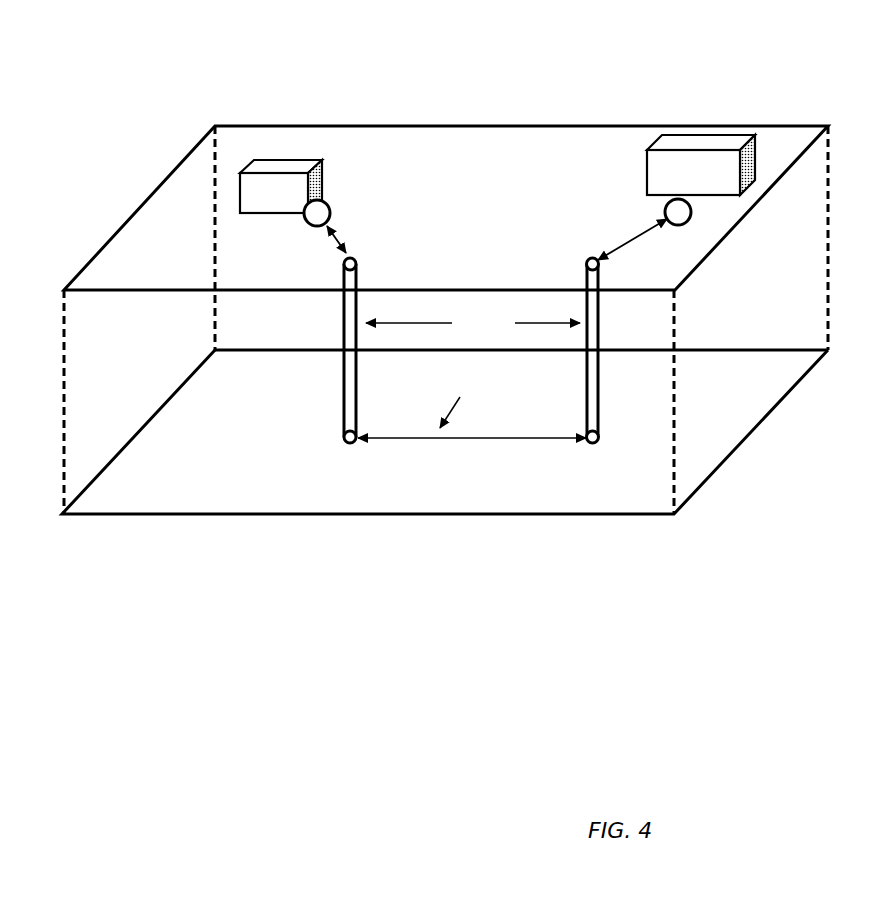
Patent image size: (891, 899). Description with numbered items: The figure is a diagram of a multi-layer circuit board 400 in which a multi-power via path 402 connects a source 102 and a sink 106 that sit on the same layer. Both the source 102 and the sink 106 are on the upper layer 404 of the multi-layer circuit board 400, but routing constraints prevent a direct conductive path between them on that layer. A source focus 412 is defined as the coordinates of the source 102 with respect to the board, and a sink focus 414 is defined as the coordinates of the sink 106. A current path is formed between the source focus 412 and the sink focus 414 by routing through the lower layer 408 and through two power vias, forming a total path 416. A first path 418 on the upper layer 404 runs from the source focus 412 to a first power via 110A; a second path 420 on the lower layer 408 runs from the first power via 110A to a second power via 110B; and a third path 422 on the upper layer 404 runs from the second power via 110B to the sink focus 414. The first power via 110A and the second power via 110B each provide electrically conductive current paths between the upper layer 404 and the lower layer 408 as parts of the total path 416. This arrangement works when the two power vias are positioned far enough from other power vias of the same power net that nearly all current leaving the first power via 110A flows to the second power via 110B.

The multi-layer circuit board 400 is at (520, 48).
The upper layer 404 is at (445, 140).
The lower layer 408 is at (572, 502).
The sink 106 is at (259, 159).
The source 102 is at (731, 133).
The sink focus 414 is at (330, 213).
The source focus 412 is at (663, 210).
The second power via 110B is at (358, 413).
The first power via 110A is at (600, 426).
The third path 422 is at (343, 240).
The first path 418 is at (640, 238).
The multi-power via path 402 is at (473, 325).
The total path 416 is at (490, 393).
The second path 420 is at (473, 444).